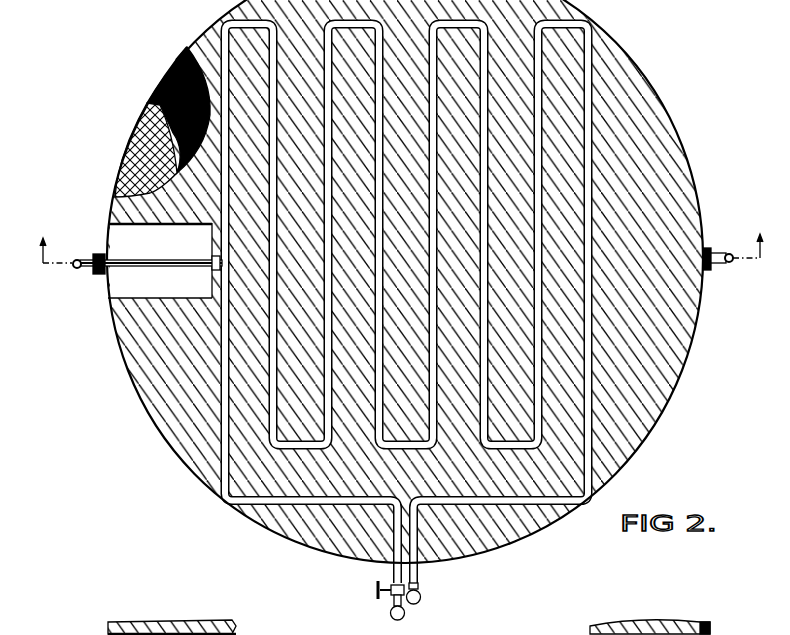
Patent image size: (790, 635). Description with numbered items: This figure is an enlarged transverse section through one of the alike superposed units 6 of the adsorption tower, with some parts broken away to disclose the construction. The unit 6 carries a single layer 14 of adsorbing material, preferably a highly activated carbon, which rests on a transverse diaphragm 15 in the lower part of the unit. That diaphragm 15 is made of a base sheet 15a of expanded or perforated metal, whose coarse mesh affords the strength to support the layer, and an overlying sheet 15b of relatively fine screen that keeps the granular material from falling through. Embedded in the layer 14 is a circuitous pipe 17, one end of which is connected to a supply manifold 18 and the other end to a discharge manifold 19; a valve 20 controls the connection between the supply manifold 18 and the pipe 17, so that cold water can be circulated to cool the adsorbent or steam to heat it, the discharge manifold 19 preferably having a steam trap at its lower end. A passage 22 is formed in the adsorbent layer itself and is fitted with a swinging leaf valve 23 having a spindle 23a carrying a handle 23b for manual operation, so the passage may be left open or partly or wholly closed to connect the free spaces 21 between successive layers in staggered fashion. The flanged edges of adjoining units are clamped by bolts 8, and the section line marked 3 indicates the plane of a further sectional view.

The drum shell 6 is at (652, 97).
The insulating filling 14 is at (653, 402).
The heating medium cavity 15 is at (170, 73).
The cavity portion 15a is at (142, 143).
The cavity wall 15b is at (180, 58).
The coil tube 17 is at (591, 312).
The inlet fitting 18 is at (388, 612).
The outlet fitting 19 is at (422, 598).
The valve 20 is at (378, 586).
The bearing block 22 is at (145, 288).
The shaft 23 is at (133, 266).
The shaft collar 23a is at (135, 271).
The shaft end 23b is at (743, 219).
The section line 3- 3 is at (405, 246).
The flange 8 is at (98, 625).
The plate 21 is at (260, 632).